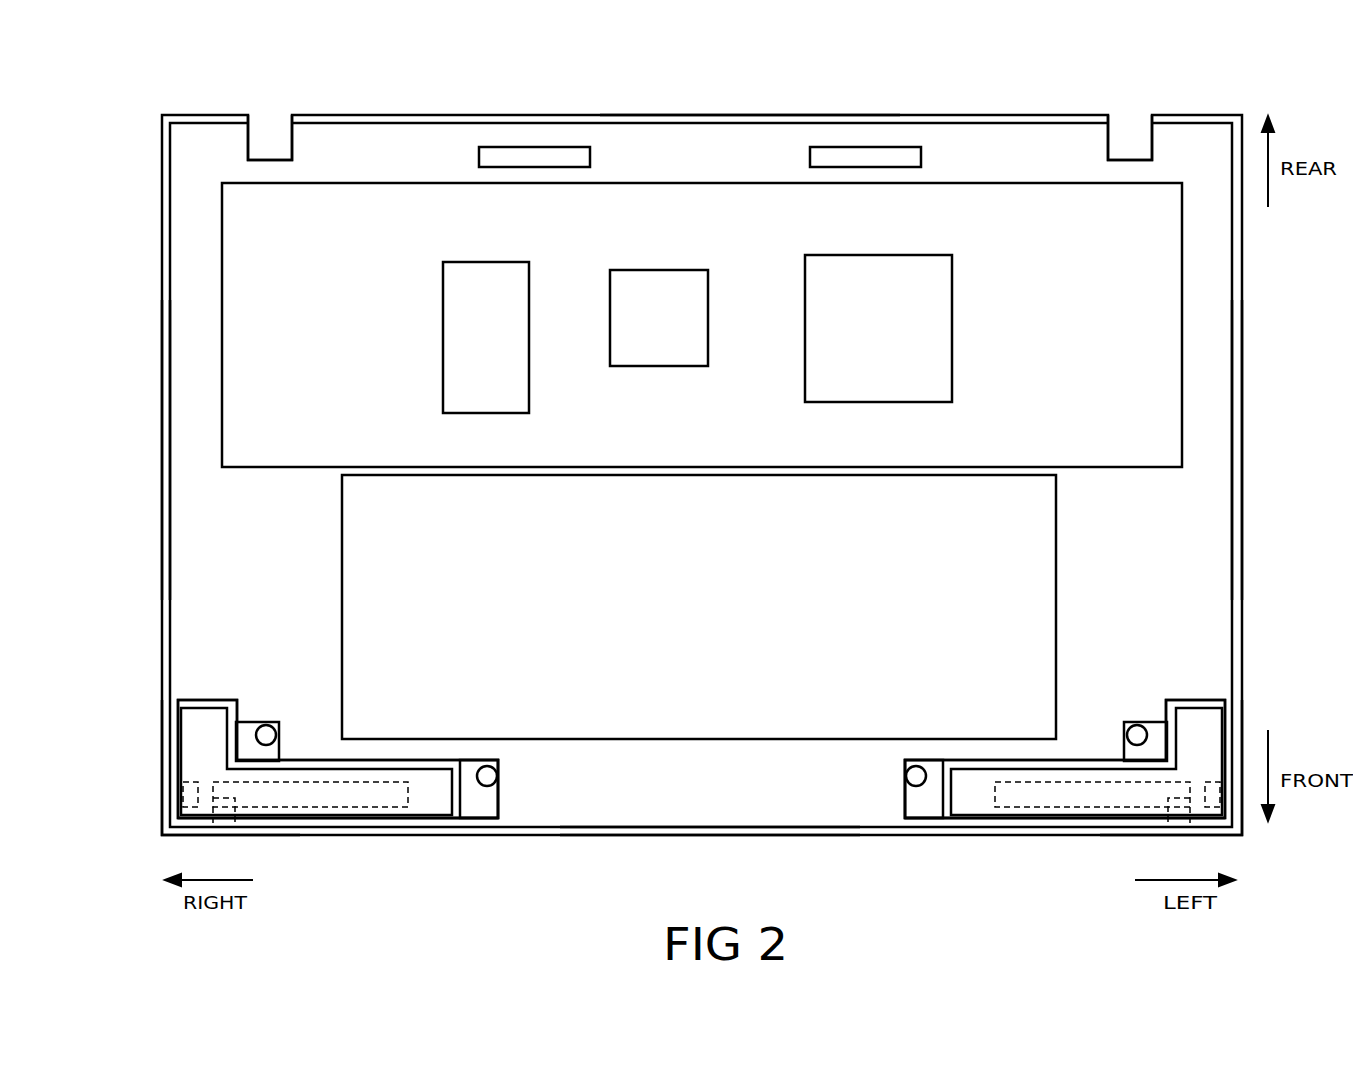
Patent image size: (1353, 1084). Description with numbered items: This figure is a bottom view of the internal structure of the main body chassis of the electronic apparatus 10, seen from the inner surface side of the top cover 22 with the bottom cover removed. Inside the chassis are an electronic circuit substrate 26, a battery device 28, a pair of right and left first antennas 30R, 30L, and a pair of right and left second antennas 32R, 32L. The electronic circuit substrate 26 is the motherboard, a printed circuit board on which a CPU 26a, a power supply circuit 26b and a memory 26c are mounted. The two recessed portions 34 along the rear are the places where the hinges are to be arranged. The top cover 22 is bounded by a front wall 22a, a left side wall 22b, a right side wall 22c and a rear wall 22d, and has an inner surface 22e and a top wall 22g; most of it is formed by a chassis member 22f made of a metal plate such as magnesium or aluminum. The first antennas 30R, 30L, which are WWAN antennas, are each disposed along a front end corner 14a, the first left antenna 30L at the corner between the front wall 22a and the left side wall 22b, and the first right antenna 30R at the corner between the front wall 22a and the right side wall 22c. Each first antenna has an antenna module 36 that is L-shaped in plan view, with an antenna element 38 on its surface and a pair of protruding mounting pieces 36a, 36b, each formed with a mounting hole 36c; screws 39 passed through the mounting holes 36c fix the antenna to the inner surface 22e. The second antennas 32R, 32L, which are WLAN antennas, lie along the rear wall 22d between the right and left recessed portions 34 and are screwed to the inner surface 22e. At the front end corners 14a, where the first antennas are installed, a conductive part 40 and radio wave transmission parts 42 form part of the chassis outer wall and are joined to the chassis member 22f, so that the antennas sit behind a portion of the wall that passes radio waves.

The electronic apparatus 10 is at (100, 64).
The front end corner 14a is at (162, 835).
The top cover 22 is at (564, 109).
The front wall 22a is at (757, 833).
The left side wall 22b is at (1240, 472).
The right side wall 22c is at (165, 472).
The rear wall 22d is at (758, 115).
The inner surface 22e is at (645, 805).
The chassis member 22f is at (197, 523).
The top wall 22g is at (1207, 523).
The electronic circuit substrate 26 is at (1039, 299).
The CPU 26a is at (655, 298).
The power supply circuit 26b is at (468, 298).
The memory 26c is at (935, 299).
The battery device 28 is at (700, 715).
The first right antenna 30R is at (204, 692).
The first left antenna 30L is at (1199, 692).
The second right antenna 32R is at (533, 160).
The second left antenna 32L is at (833, 160).
The recessed portion 34 is at (250, 142).
The antenna module 36 is at (200, 756).
The mounting piece 36a is at (480, 805).
The mounting piece 36b is at (248, 724).
The mounting hole 36c is at (266, 725).
The antenna element 38 is at (311, 808).
The screw 39 is at (697, 740).
The conductive part 40 is at (390, 830).
The radio wave transmission part 42 is at (173, 717).